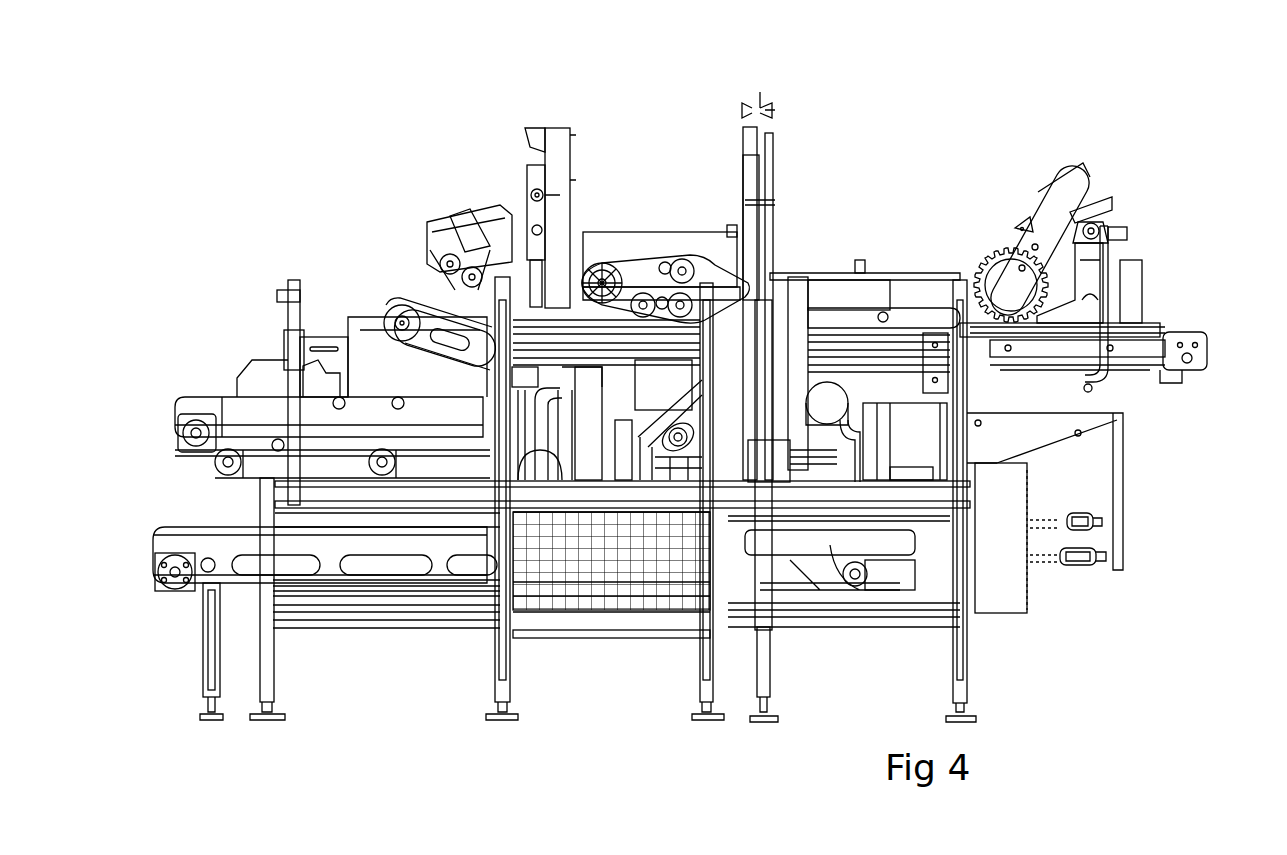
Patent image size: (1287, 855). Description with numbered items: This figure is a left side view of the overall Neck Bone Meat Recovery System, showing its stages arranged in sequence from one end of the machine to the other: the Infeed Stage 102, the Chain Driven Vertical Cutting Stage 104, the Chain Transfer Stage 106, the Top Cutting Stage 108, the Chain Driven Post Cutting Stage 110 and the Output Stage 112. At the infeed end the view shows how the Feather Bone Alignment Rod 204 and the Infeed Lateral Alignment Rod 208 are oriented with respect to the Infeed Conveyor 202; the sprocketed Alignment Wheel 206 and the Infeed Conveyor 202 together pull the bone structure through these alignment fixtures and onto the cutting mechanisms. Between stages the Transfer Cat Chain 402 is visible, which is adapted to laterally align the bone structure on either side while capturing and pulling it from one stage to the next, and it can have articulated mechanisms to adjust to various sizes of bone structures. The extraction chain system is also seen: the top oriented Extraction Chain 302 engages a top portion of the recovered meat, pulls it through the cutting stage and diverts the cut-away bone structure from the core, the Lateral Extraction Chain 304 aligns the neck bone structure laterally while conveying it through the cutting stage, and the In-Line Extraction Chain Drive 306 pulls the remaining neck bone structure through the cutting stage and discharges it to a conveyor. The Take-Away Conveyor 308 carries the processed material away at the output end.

The Infeed Stage 102 is at (1165, 253).
The Chain Driven Vertical Cutting Stage 104 is at (818, 128).
The Chain Transfer Stage 106 is at (652, 112).
The Top Cutting Stage 108 is at (553, 98).
The Chain Driven Post Cutting Stage 110 is at (388, 108).
The Output Stage 112 is at (150, 280).
The Infeed Conveyor 202 is at (1182, 342).
The Feather Bone Alignment Rod 204 is at (1147, 320).
The Alignment Wheel 206 is at (987, 267).
The Infeed Lateral Alignment Rod 208 is at (1148, 352).
The Extraction Chain 302 is at (512, 263).
The Lateral Extraction Chain 304 is at (437, 305).
The In-Line Extraction Chain Drive 306 is at (395, 308).
The Take-Away Conveyor 308 is at (205, 388).
The Transfer Cat Chain 402 is at (648, 258).